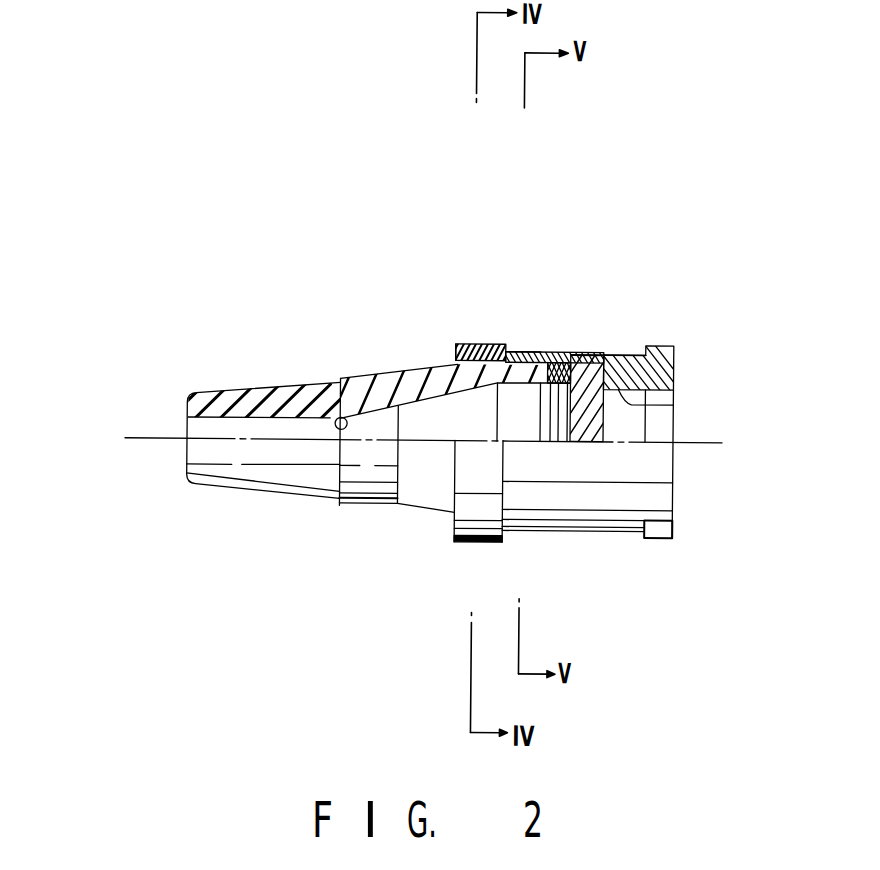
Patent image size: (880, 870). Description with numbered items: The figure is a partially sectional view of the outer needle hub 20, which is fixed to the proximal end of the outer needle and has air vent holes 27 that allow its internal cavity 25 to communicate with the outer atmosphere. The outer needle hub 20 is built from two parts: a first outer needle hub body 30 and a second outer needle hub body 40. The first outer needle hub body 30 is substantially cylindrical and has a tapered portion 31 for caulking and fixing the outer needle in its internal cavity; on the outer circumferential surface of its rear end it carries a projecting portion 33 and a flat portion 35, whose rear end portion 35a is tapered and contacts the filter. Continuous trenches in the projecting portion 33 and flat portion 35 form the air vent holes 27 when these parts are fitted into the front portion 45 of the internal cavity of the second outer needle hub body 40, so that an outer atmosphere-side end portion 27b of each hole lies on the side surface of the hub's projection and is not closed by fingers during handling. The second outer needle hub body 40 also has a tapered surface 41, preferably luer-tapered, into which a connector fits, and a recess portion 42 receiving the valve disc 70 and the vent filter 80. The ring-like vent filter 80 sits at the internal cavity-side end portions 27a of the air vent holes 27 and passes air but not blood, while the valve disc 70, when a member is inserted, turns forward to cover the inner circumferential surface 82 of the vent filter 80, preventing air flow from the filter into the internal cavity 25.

The outer needle hub 20 is at (633, 289).
The internal cavity 25 is at (452, 420).
The air vent holes 27 is at (478, 351).
The internal cavity-side end portions 27a is at (547, 385).
The outer atmosphere-side end portion 27b is at (455, 352).
The first outer needle hub body 30 is at (227, 383).
The tapered portion 31 is at (327, 418).
The projecting portion 33 is at (455, 362).
The flat portion 35 is at (515, 351).
The rear end portion 35a is at (542, 351).
The second outer needle hub body 40 is at (641, 342).
The tapered surface 41 is at (673, 403).
The recess portion 42 is at (593, 352).
The front portion 45 is at (463, 344).
The valve disc 70 is at (617, 352).
The vent filter 80 is at (582, 351).
The inner circumferential surface 82 is at (557, 385).